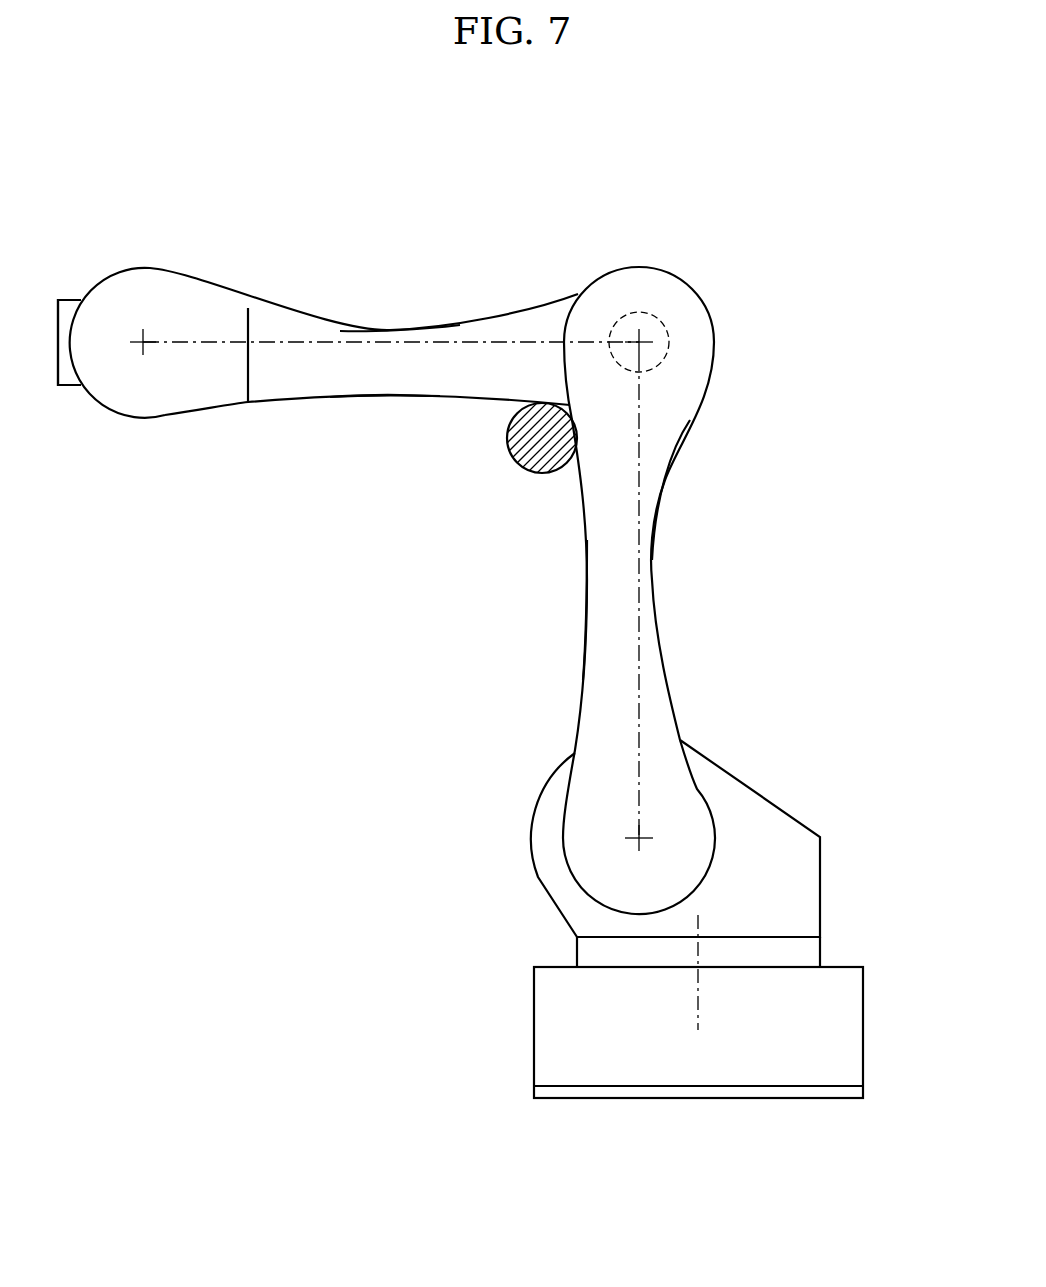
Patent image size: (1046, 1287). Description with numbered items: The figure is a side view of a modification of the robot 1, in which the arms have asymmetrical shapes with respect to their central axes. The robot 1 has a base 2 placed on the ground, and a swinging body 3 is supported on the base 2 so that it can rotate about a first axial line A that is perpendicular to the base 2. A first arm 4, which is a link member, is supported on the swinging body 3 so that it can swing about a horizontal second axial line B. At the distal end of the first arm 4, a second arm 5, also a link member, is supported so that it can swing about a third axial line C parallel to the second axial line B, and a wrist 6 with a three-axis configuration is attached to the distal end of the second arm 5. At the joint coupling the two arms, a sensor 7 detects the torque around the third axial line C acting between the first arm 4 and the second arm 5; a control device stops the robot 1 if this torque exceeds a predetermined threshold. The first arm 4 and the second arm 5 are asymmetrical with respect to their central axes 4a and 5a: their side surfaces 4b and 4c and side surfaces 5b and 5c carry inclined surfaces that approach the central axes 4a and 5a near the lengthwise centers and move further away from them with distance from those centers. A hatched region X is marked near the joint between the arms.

The robot 1 is at (772, 178).
The base 2 is at (865, 1030).
The swinging body 3 is at (822, 897).
The first arm 4 is at (607, 658).
The central axis 4a is at (640, 565).
The side surface 4b is at (585, 592).
The side surface 4c is at (668, 478).
The second arm 5 is at (333, 372).
The central axis 5a is at (339, 340).
The side surface 5b is at (393, 400).
The side surface 5c is at (422, 330).
The wrist 6 is at (153, 248).
The sensor 7 is at (639, 312).
The first axial line A is at (700, 1000).
The second axial line B is at (637, 834).
The third axial line C is at (645, 340).
The cross-section portion X is at (520, 464).